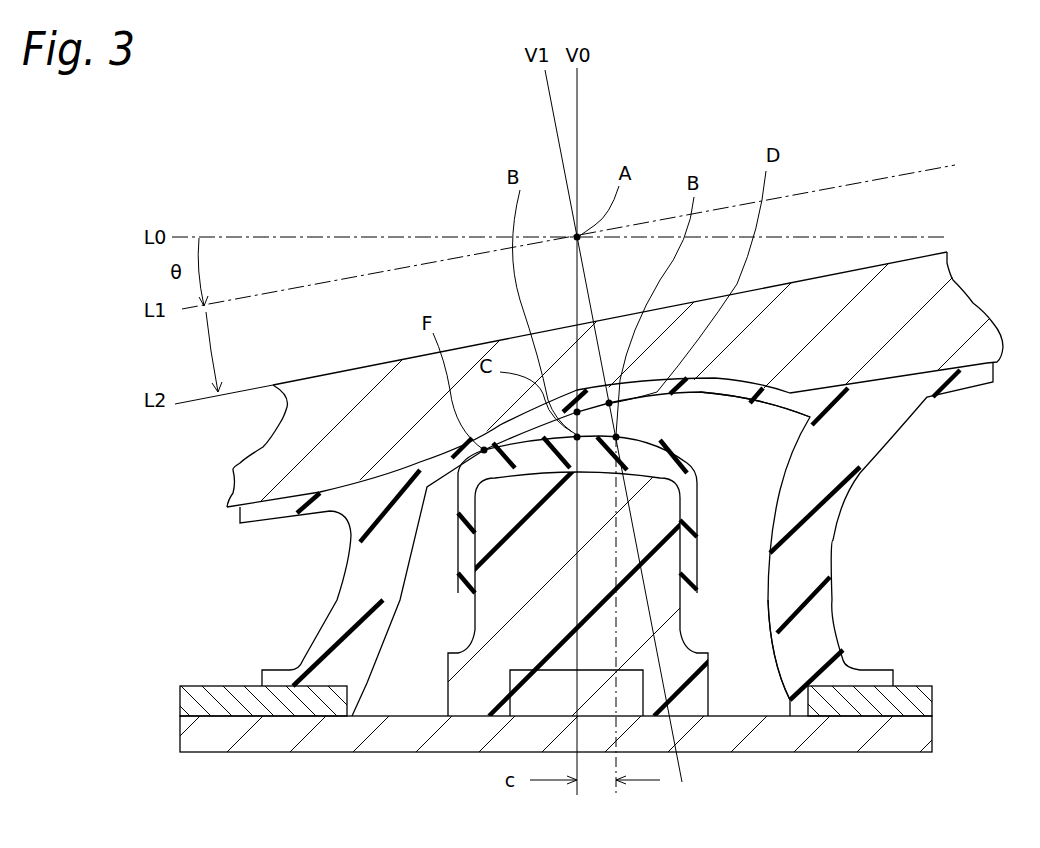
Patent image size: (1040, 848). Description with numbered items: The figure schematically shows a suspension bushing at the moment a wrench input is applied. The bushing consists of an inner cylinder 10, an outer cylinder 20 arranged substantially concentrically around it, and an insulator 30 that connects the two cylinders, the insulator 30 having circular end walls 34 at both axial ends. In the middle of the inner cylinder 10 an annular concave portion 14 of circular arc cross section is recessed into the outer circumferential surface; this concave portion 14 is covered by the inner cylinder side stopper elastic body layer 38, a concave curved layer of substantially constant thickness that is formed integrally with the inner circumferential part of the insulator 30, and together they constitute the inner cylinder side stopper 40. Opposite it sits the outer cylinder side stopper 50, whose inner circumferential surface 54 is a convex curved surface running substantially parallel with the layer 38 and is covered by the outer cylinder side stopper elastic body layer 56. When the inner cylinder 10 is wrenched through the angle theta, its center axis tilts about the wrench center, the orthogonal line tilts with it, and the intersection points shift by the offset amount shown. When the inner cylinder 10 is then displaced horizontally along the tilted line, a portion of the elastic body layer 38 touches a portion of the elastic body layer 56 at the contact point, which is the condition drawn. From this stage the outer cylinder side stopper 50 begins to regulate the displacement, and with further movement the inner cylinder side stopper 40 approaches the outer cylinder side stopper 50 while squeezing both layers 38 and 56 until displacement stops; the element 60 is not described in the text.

The inner cylinder 10 is at (368, 378).
The concave portion 14 is at (720, 383).
The outer cylinder 20 is at (393, 752).
The insulator 30 is at (340, 528).
The end wall 34 is at (828, 543).
The inner cylinder side stopper elastic body layer 38 is at (778, 398).
The inner cylinder side stopper 40 is at (773, 410).
The outer cylinder side stopper 50 is at (658, 573).
The inner circumferential surface 54 is at (693, 463).
The outer cylinder side stopper elastic body layer 56 is at (648, 437).
The gap 60 is at (743, 635).